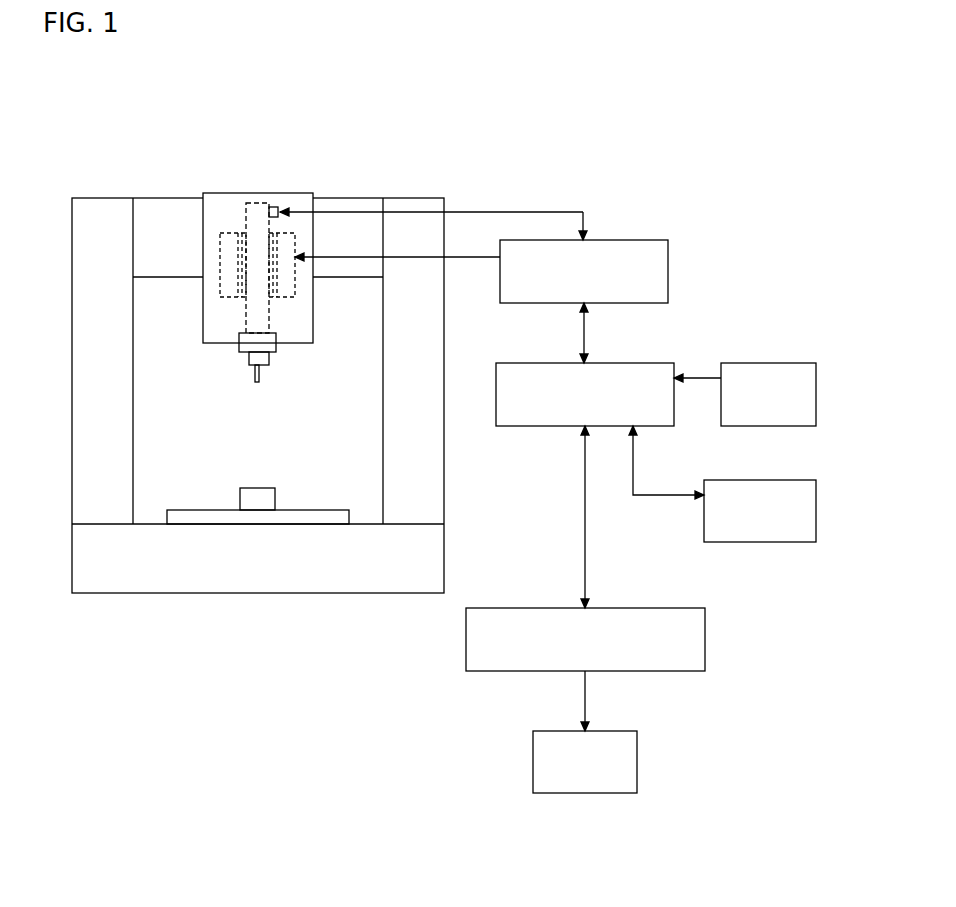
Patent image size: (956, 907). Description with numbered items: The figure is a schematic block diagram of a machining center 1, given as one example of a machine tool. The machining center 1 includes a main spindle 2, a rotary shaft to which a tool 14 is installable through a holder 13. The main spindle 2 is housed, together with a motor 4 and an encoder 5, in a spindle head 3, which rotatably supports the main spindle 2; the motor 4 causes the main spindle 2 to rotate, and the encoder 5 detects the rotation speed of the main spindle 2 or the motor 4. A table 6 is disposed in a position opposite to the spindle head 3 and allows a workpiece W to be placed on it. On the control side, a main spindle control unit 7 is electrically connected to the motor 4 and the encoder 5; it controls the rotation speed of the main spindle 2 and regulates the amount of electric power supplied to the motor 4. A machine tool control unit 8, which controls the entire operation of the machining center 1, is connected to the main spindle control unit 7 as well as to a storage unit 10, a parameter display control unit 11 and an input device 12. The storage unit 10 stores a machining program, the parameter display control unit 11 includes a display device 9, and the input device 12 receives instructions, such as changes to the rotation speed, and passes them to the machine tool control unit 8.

The machining center 1 is at (513, 174).
The main spindle 2 is at (252, 323).
The spindle head 3 is at (293, 330).
The motor 4 is at (292, 283).
The encoder 5 is at (275, 207).
The table 6 is at (330, 515).
The main spindle control unit 7 is at (657, 238).
The machine tool control unit 8 is at (663, 362).
The display device 9 is at (628, 730).
The storage unit 10 is at (805, 479).
The parameter display control unit 11 is at (695, 606).
The input device 12 is at (805, 362).
The holder 13 is at (262, 360).
The tool 14 is at (253, 377).
The workpiece W is at (270, 498).